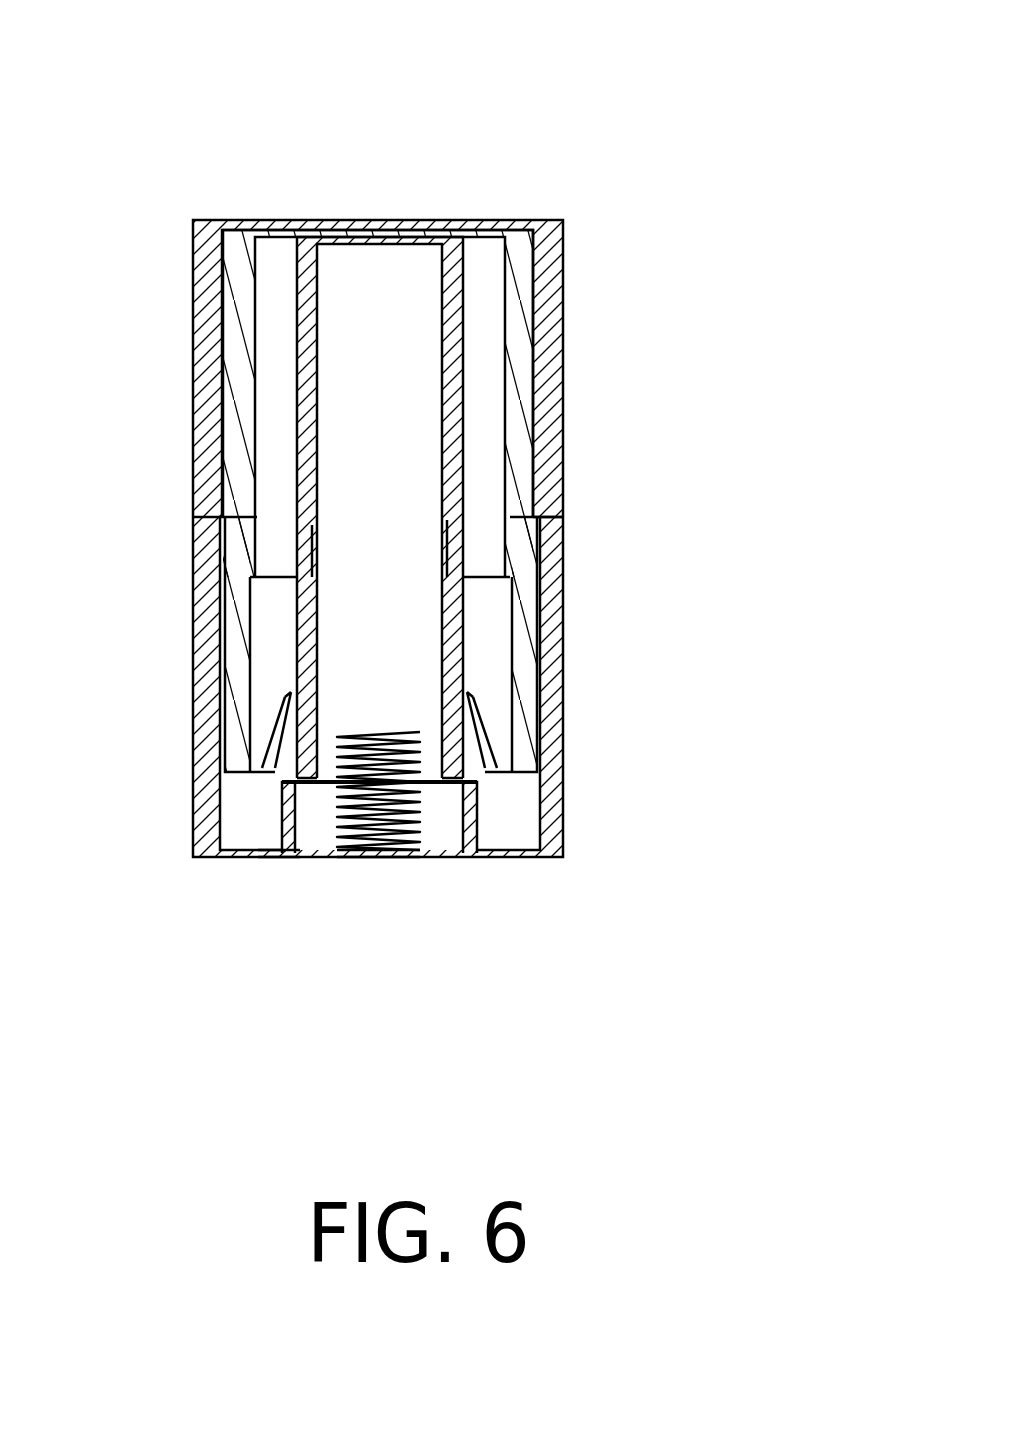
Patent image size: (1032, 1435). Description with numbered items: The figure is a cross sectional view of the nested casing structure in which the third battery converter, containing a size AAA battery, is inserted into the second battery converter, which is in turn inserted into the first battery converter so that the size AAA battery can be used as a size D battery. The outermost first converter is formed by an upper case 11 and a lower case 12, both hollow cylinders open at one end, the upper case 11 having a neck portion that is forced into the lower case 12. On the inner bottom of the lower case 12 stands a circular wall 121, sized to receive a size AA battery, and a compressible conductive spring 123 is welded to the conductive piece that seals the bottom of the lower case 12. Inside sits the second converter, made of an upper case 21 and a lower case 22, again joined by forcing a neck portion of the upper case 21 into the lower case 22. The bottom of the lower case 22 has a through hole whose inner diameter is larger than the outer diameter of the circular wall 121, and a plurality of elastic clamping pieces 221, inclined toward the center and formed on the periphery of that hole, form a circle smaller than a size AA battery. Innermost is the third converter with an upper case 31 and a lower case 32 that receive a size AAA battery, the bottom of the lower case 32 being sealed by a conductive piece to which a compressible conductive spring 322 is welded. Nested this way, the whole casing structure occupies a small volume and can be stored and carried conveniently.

The upper case 11 is at (557, 360).
The lower case 12 is at (553, 690).
The circular wall 121 is at (290, 826).
The conductive spring 123 is at (402, 822).
The upper case 21 is at (513, 280).
The lower case 22 is at (518, 602).
The elastic clamping pieces 221 is at (295, 730).
The upper case 31 is at (458, 237).
The lower case 32 is at (450, 745).
The conductive spring 322 is at (365, 732).